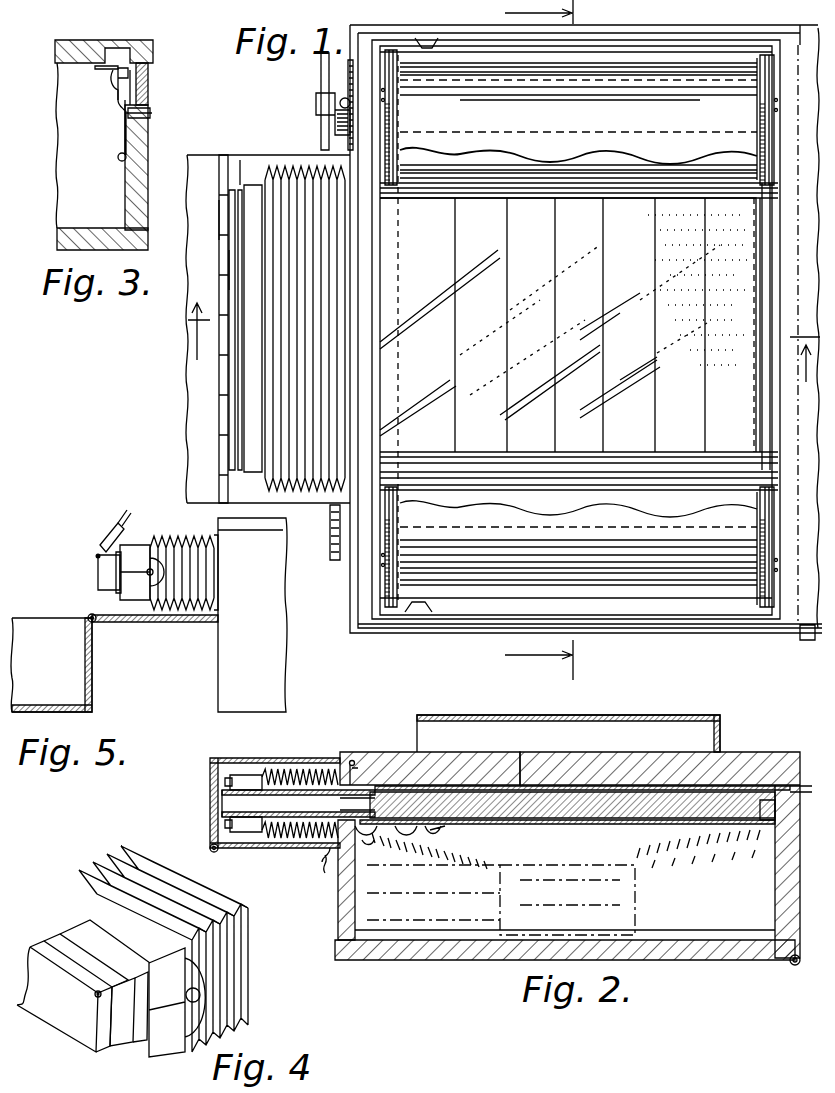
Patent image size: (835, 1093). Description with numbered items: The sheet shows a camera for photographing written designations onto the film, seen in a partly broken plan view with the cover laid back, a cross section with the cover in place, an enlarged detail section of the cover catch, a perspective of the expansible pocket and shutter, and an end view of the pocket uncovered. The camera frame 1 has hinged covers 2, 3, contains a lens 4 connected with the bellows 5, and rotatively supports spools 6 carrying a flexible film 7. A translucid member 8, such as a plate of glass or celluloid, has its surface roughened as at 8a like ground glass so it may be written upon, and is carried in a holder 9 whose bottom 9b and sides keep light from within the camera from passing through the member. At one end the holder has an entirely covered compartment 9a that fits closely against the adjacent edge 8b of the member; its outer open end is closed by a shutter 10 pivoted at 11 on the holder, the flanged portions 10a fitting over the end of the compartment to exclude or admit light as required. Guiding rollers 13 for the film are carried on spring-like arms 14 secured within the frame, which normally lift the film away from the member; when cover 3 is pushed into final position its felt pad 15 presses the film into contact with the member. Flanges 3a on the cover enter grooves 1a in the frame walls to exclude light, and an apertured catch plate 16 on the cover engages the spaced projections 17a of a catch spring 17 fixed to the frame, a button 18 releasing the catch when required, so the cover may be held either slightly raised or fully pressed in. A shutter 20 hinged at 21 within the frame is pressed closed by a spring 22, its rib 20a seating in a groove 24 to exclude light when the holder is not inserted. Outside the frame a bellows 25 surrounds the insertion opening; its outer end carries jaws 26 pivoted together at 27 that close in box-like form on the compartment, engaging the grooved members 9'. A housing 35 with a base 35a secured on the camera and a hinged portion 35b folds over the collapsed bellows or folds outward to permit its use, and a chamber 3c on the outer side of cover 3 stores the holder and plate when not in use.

In FIG. 1, the frame 1 is at (745, 635).
In FIG. 3, the frame 1 is at (123, 210).
In FIG. 5, the frame 1 is at (258, 672).
In FIG. 2, the frame 1 is at (758, 904).
In FIG. 1, the grooves 1a is at (660, 40).
In FIG. 3, the grooves 1a is at (150, 90).
In FIG. 1, the cover 2 is at (489, 342).
In FIG. 3, the cover 2 is at (111, 162).
In FIG. 2, the cover 2 is at (567, 967).
In FIG. 1, the cover 3 is at (413, 604).
In FIG. 3, the cover 3 is at (60, 42).
In FIG. 5, the cover 3 is at (252, 615).
In FIG. 2, the cover 3 is at (772, 755).
In FIG. 3, the flanges 3a is at (150, 72).
In FIG. 2, the flanges 3a is at (365, 760).
In FIG. 2, the chamber 3c is at (688, 716).
In FIG. 2, the lens 4 is at (640, 906).
In FIG. 2, the bellows 5 is at (501, 900).
In FIG. 1, the spools 6 is at (756, 60).
In FIG. 1, the flexible film 7 is at (578, 324).
In FIG. 2, the flexible film 7 is at (800, 792).
In FIG. 1, the translucid member 8 is at (571, 340).
In FIG. 2, the translucid member 8 is at (572, 820).
In FIG. 1, the roughened surface 8a is at (685, 290).
In FIG. 2, the edge of member 8b is at (368, 805).
In FIG. 1, the holder 9 is at (460, 329).
In FIG. 5, the holder 9 is at (91, 573).
In FIG. 4, the holder 9 is at (122, 1012).
In FIG. 1, the grooved members 9' is at (221, 273).
In FIG. 5, the grooved members 9' is at (96, 581).
In FIG. 4, the grooved members 9' is at (142, 962).
In FIG. 1, the compartment 9a is at (511, 250).
In FIG. 2, the compartment 9a is at (298, 803).
In FIG. 2, the bottom 9b is at (630, 826).
In FIG. 1, the shutter 10 is at (224, 222).
In FIG. 5, the shutter 10 is at (100, 532).
In FIG. 2, the shutter 10 is at (220, 800).
In FIG. 4, the shutter 10 is at (33, 1005).
In FIG. 5, the flanged portions 10a is at (128, 498).
In FIG. 2, the flanged portions 10a is at (225, 823).
In FIG. 4, the flanged portions 10a is at (100, 1052).
In FIG. 1, the pivot 11 is at (232, 270).
In FIG. 5, the pivot 11 is at (95, 560).
In FIG. 4, the pivot 11 is at (56, 963).
In FIG. 1, the guiding rollers 13 is at (524, 165).
In FIG. 1, the spring-like arms 14 is at (397, 134).
In FIG. 2, the pad 15 is at (510, 762).
In FIG. 3, the catch plate 16 is at (100, 68).
In FIG. 1, the catch spring 17 is at (432, 44).
In FIG. 3, the catch spring 17 is at (114, 140).
In FIG. 3, the projections 17a is at (145, 60).
In FIG. 3, the button 18 is at (150, 116).
In FIG. 2, the shutter 20 is at (390, 845).
In FIG. 2, the rib 20a is at (439, 834).
In FIG. 2, the hinge 21 is at (378, 846).
In FIG. 2, the spring 22 is at (430, 846).
In FIG. 2, the groove 24 is at (388, 765).
In FIG. 1, the bellows 25 is at (296, 333).
In FIG. 5, the bellows 25 is at (184, 572).
In FIG. 2, the bellows 25 is at (300, 768).
In FIG. 4, the bellows 25 is at (249, 914).
In FIG. 1, the jaws 26 is at (250, 433).
In FIG. 5, the jaws 26 is at (135, 548).
In FIG. 2, the jaws 26 is at (244, 770).
In FIG. 4, the jaws 26 is at (177, 1002).
In FIG. 5, the pivot 27 is at (152, 590).
In FIG. 4, the pivot 27 is at (200, 995).
In FIG. 2, the housing 35 is at (215, 758).
In FIG. 1, the base 35a is at (330, 505).
In FIG. 5, the base 35a is at (200, 624).
In FIG. 2, the base 35a is at (325, 855).
In FIG. 5, the hinged portion 35b is at (98, 676).
In FIG. 2, the hinged portion 35b is at (202, 783).